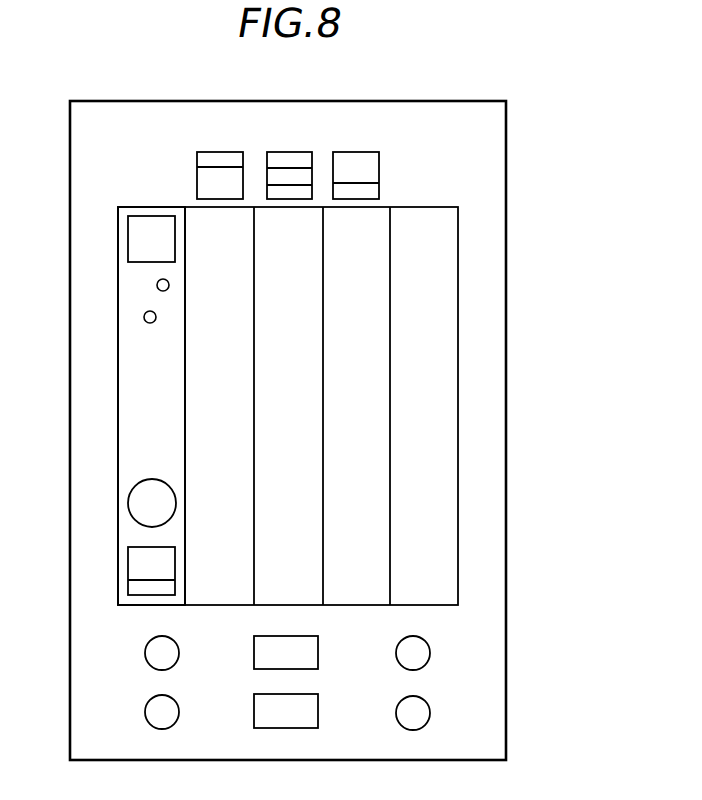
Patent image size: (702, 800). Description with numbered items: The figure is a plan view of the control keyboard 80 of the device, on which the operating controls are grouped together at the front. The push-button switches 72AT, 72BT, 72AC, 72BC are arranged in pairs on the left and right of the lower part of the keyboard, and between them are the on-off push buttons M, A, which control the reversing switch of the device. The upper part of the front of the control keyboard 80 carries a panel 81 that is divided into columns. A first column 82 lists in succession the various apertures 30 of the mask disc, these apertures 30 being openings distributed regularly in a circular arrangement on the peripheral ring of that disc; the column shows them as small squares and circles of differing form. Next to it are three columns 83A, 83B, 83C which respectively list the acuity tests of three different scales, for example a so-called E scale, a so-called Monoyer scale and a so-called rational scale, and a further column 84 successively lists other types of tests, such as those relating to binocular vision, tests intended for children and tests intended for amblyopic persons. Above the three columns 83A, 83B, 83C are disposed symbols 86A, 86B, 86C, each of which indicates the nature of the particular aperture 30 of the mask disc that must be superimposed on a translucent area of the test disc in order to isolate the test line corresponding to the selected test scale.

The control keyboard 80 is at (511, 164).
The panel 81 is at (133, 197).
The first column 82 is at (125, 289).
The column 84 is at (461, 219).
The column 83A is at (188, 207).
The column 83B is at (315, 208).
The column 83C is at (387, 208).
The symbol 86A is at (224, 152).
The symbol 86B is at (288, 152).
The symbol 86C is at (369, 152).
The apertures 30 is at (133, 224).
The push-button switch 72AT is at (147, 651).
The push-button switch 72BT is at (147, 711).
The push-button switch 72AC is at (425, 657).
The push-button switch 72BC is at (425, 716).
The on-off push button M is at (310, 663).
The on-off push button A is at (310, 722).